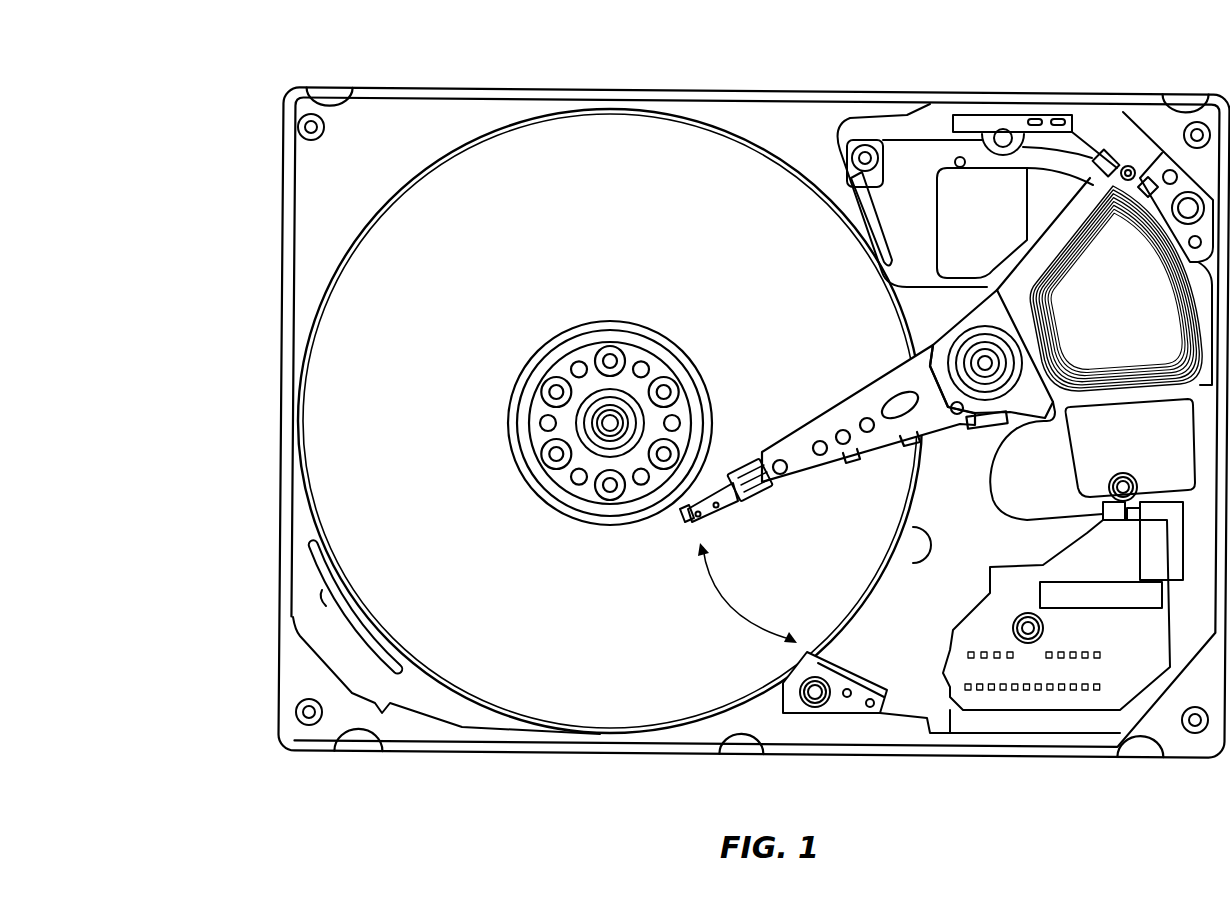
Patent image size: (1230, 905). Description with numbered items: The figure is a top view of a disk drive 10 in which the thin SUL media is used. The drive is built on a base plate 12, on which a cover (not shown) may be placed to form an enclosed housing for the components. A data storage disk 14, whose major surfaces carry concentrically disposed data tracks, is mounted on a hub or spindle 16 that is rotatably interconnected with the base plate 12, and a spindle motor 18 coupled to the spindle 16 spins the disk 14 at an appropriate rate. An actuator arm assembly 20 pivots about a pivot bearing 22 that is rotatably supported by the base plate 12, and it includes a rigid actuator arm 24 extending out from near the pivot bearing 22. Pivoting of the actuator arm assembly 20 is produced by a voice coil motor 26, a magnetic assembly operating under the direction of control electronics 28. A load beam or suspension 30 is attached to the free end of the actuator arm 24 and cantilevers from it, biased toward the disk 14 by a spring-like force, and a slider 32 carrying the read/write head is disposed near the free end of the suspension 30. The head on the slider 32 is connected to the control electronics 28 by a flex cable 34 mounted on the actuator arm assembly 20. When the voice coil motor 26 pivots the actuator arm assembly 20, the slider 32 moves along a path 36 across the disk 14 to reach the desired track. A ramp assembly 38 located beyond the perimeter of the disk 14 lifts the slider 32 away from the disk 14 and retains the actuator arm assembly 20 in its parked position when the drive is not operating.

The disk drive 10 is at (210, 180).
The base plate 12 is at (488, 87).
The data storage disk 14 is at (623, 140).
The spindle 16 is at (643, 322).
The spindle motor 18 is at (588, 393).
The actuator arm assembly 20 is at (859, 382).
The pivot bearing 22 is at (980, 388).
The actuator arm 24 is at (838, 470).
The voice coil motor 26 is at (1025, 247).
The control electronics 28 is at (1035, 700).
The suspension 30 is at (728, 468).
The slider 32 is at (690, 532).
The flex cable 34 is at (997, 512).
The path 36 is at (740, 597).
The ramp assembly 38 is at (850, 700).